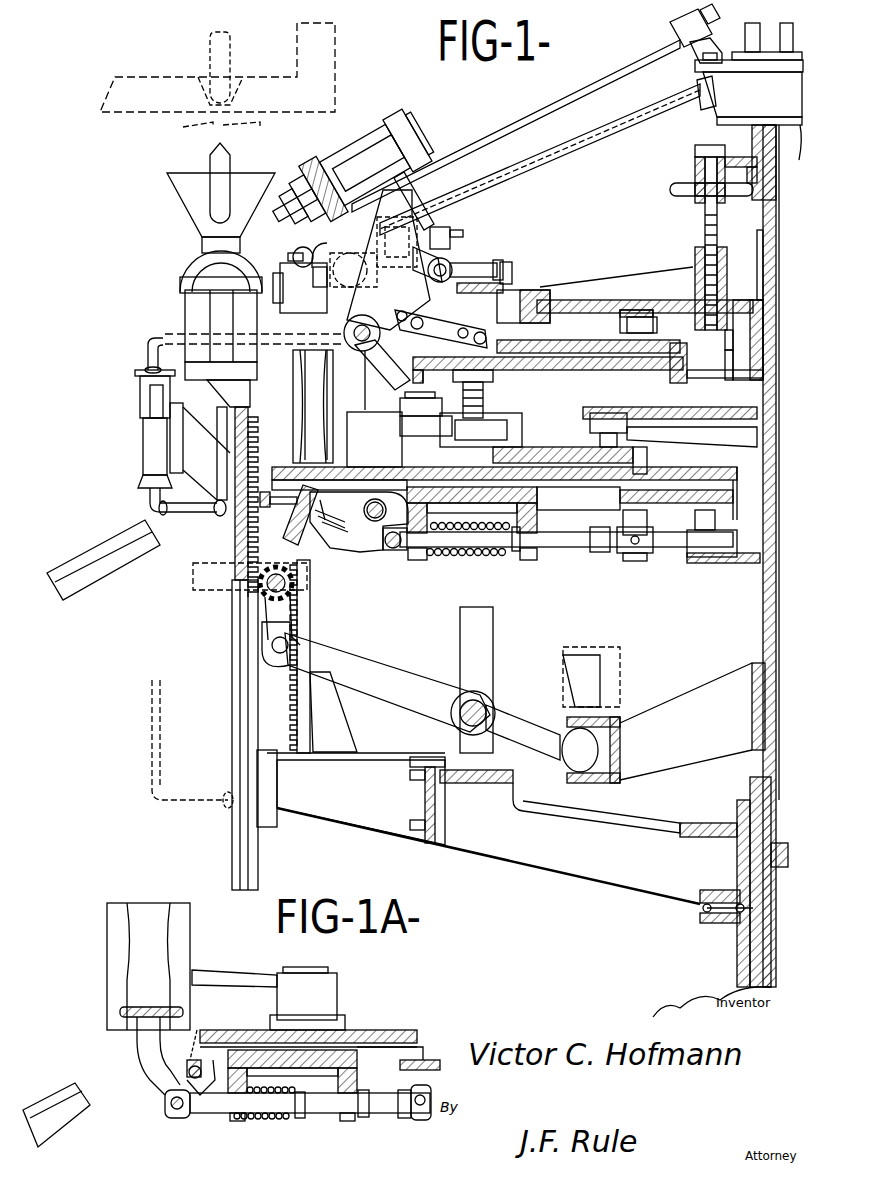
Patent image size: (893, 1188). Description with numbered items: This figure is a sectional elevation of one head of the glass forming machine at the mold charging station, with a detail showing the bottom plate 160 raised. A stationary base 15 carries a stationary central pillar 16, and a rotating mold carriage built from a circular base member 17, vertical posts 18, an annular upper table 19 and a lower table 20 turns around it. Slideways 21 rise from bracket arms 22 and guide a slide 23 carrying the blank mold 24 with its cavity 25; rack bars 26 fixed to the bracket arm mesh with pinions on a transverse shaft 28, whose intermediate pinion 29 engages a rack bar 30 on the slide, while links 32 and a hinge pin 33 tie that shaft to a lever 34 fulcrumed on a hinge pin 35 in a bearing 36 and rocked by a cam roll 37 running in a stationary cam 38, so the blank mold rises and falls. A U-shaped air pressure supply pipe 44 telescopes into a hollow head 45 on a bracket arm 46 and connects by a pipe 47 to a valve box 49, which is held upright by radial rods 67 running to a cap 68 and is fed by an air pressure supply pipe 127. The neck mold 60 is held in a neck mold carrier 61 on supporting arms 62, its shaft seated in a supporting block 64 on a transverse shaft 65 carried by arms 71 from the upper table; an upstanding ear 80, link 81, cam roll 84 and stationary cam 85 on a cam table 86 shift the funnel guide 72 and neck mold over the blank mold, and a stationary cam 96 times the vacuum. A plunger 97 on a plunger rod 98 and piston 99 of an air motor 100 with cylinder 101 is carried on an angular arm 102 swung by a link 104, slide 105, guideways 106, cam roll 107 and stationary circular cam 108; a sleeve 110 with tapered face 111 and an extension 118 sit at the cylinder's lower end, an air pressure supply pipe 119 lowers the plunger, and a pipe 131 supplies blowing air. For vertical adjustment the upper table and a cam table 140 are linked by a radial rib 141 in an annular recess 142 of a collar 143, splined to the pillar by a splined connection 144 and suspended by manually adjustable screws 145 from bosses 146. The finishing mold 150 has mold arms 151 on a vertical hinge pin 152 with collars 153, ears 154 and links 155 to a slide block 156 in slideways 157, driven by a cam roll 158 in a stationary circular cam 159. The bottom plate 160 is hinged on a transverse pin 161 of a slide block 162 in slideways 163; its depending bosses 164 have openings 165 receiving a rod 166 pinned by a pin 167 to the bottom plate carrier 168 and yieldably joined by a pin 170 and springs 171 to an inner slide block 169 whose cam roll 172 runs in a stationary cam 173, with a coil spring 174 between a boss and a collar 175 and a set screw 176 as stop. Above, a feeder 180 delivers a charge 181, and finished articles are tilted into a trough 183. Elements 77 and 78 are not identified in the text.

In FIG. 1, the stationary base 15 is at (690, 972).
In FIG. 1, the stationary central pillar 16 is at (763, 637).
In FIG. 1, the circular frame or base member 17 is at (567, 873).
In FIG. 1, the vertical posts 18 is at (493, 645).
In FIG. 1, the annular table 19 is at (552, 370).
In FIG. 1, the table 20 is at (700, 470).
In FIG. 1A, the table 20 is at (380, 1030).
In FIG. 1, the slideways 21 is at (232, 848).
In FIG. 1, the bracket arms 22 is at (370, 818).
In FIG. 1, the slide 23 is at (235, 547).
In FIG. 1, the blank mold 24 is at (185, 308).
In FIG. 1, the cavity 25 is at (165, 337).
In FIG. 1, the vertical rack bars 26 is at (310, 620).
In FIG. 1, the transverse shaft 28 is at (258, 590).
In FIG. 1, the intermediate pinion 29 is at (262, 612).
In FIG. 1, the rack bar 30 is at (245, 572).
In FIG. 1, the links 32 is at (310, 640).
In FIG. 1, the hinge pin 33 is at (290, 650).
In FIG. 1, the lever 34 is at (385, 674).
In FIG. 1, the hinge pin 35 is at (488, 708).
In FIG. 1, the bearing 36 is at (455, 785).
In FIG. 1, the cam roll 37 is at (580, 775).
In FIG. 1, the stationary cam 38 is at (618, 785).
In FIG. 1, the air pressure supply pipe 44 is at (205, 518).
In FIG. 1, the hollow head 45 is at (143, 433).
In FIG. 1, the bracket arm 46 is at (208, 483).
In FIG. 1, the pipe 47 is at (126, 354).
In FIG. 1, the valve box 49 is at (440, 228).
In FIG. 1, the neck mold 60 is at (215, 268).
In FIG. 1, the neck mold carrier 61 is at (182, 276).
In FIG. 1, the supporting arms 62 is at (278, 254).
In FIG. 1, the supporting block 64 is at (420, 300).
In FIG. 1, the transverse shaft 65 is at (365, 372).
In FIG. 1, the radial rods 67 is at (642, 60).
In FIG. 1, the cap 68 is at (703, 76).
In FIG. 1, the arms 71 is at (395, 376).
In FIG. 1, the funnel guide 72 is at (183, 200).
In FIG. 1, the rod 77 is at (315, 405).
In FIG. 1, the pivot 78 is at (290, 345).
In FIG. 1, the upstanding ear 80 is at (402, 300).
In FIG. 1, the link 81 is at (492, 315).
In FIG. 1, the cam roll 84 is at (546, 297).
In FIG. 1, the stationary cam 85 is at (525, 292).
In FIG. 1, the cam table 86 is at (612, 287).
In FIG. 1, the stationary cam 96 is at (512, 268).
In FIG. 1, the plunger 97 is at (318, 174).
In FIG. 1, the plunger rod 98 is at (365, 164).
In FIG. 1, the piston 99 is at (407, 140).
In FIG. 1, the air motor 100 is at (349, 174).
In FIG. 1, the cylinder 101 is at (419, 133).
In FIG. 1, the angular arm 102 is at (368, 280).
In FIG. 1, the link 104 is at (433, 365).
In FIG. 1, the slide 105 is at (508, 372).
In FIG. 1, the guideways 106 is at (678, 370).
In FIG. 1, the cam roll 107 is at (657, 323).
In FIG. 1, the stationary circular cam 108 is at (626, 310).
In FIG. 1, the sleeve 110 is at (293, 206).
In FIG. 1, the tapered face 111 is at (307, 198).
In FIG. 1, the extension 118 is at (323, 188).
In FIG. 1, the air pressure supply pipe 119 is at (403, 176).
In FIG. 1, the air pressure supply pipe 127 is at (515, 172).
In FIG. 1, the pipe 131 is at (377, 230).
In FIG. 1, the cam table 140 is at (750, 320).
In FIG. 1, the radial rib 141 is at (745, 365).
In FIG. 1, the annular recess 142 is at (755, 378).
In FIG. 1, the collar 143 is at (740, 340).
In FIG. 1, the splined connection 144 is at (757, 245).
In FIG. 1, the manually adjustable screws 145 is at (705, 226).
In FIG. 1, the bosses 146 is at (695, 165).
In FIG. 1, the finishing mold 150 is at (293, 398).
In FIG. 1A, the finishing mold 150 is at (182, 937).
In FIG. 1A, the mold arms 151 is at (240, 970).
In FIG. 1, the vertical hinge pin 152 is at (392, 408).
In FIG. 1A, the vertical hinge pin 152 is at (300, 967).
In FIG. 1, the collars 153 is at (347, 435).
In FIG. 1A, the collars 153 is at (337, 990).
In FIG. 1, the ears 154 is at (413, 425).
In FIG. 1, the links 155 is at (533, 425).
In FIG. 1, the slide block 156 is at (560, 445).
In FIG. 1, the slideways 157 is at (647, 455).
In FIG. 1, the cam roll 158 is at (623, 395).
In FIG. 1, the stationary circular cam 159 is at (630, 425).
In FIG. 1, the bottom plate 160 is at (295, 544).
In FIG. 1A, the bottom plate 160 is at (120, 1010).
In FIG. 1, the transverse pin 161 is at (366, 506).
In FIG. 1A, the transverse pin 161 is at (187, 1073).
In FIG. 1, the slide block 162 is at (440, 535).
In FIG. 1A, the slide block 162 is at (325, 1050).
In FIG. 1, the slideways 163 is at (555, 548).
In FIG. 1A, the slideways 163 is at (378, 1127).
In FIG. 1, the depending bosses 164 is at (420, 562).
In FIG. 1A, the depending bosses 164 is at (237, 1121).
In FIG. 1, the openings 165 is at (415, 560).
In FIG. 1A, the openings 165 is at (255, 1118).
In FIG. 1, the rod 166 is at (462, 560).
In FIG. 1A, the rod 166 is at (205, 1113).
In FIG. 1, the pin 167 is at (393, 550).
In FIG. 1A, the pin 167 is at (165, 1105).
In FIG. 1, the bottom plate carrier 168 is at (340, 552).
In FIG. 1A, the bottom plate carrier 168 is at (137, 1048).
In FIG. 1, the slide block 169 is at (647, 553).
In FIG. 1A, the slide block 169 is at (440, 1058).
In FIG. 1, the pin 170 is at (630, 556).
In FIG. 1A, the pin 170 is at (418, 1118).
In FIG. 1, the springs 171 is at (625, 562).
In FIG. 1, the cam roll 172 is at (712, 560).
In FIG. 1, the stationary cam 173 is at (735, 563).
In FIG. 1, the coil spring 174 is at (506, 560).
In FIG. 1A, the coil spring 174 is at (275, 1120).
In FIG. 1, the collar 175 is at (516, 555).
In FIG. 1A, the collar 175 is at (303, 1118).
In FIG. 1, the set screw 176 is at (265, 490).
In FIG. 1A, the set screw 176 is at (197, 1030).
In FIG. 1, the feeder 180 is at (333, 47).
In FIG. 1, the charge 181 is at (212, 162).
In FIG. 1, the trough 183 is at (105, 572).
In FIG. 1A, the trough 183 is at (70, 1130).